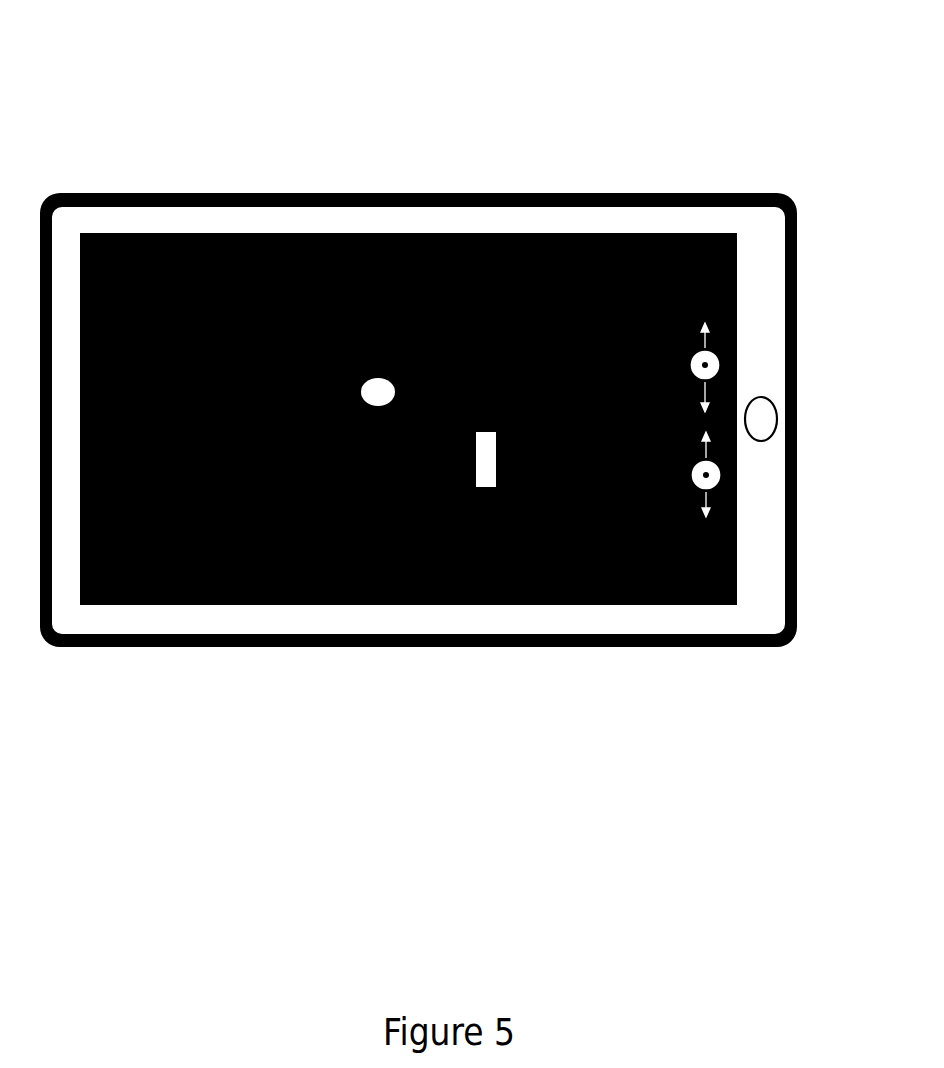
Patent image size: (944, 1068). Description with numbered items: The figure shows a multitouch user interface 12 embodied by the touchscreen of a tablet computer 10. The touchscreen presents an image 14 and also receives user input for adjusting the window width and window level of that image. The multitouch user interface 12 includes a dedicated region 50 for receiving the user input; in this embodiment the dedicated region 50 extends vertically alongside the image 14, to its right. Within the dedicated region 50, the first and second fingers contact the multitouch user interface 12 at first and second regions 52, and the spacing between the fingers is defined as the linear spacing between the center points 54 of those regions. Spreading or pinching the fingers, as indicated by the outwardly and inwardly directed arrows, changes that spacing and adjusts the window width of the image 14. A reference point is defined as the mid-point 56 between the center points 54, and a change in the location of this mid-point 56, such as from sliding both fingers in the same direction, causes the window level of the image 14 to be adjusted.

The tablet computer 10 is at (757, 83).
The multitouch user interface 12 is at (737, 240).
The image 14 is at (572, 257).
The dedicated region 50 is at (713, 575).
The first and second regions 52 is at (716, 356).
The center points 54 is at (706, 365).
The mid-point 56 is at (700, 427).